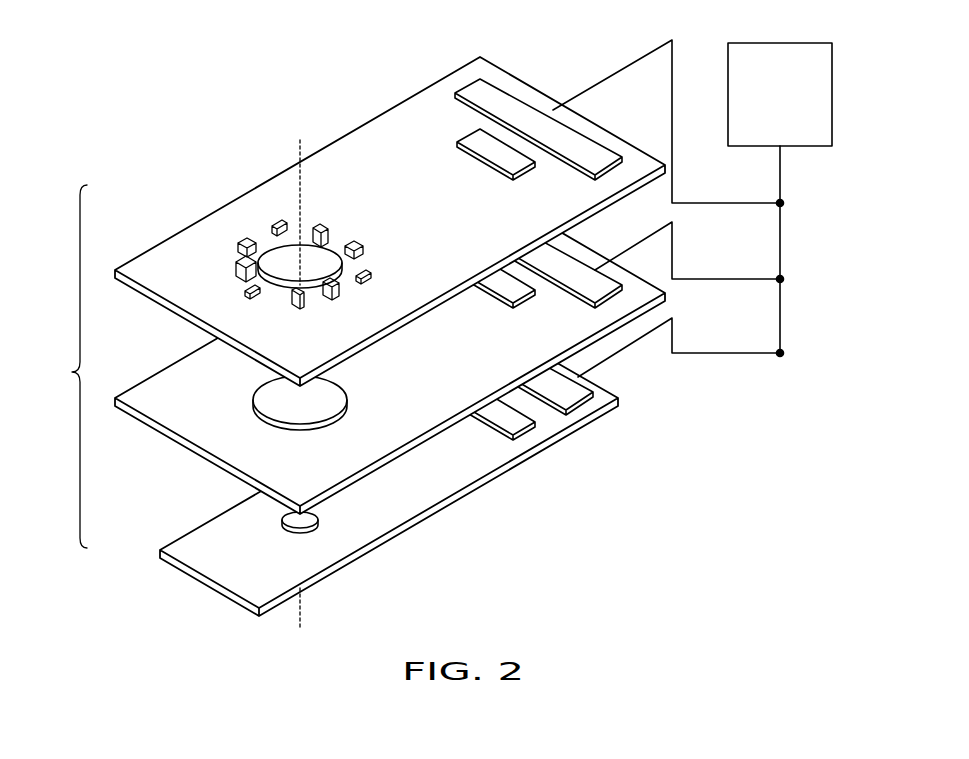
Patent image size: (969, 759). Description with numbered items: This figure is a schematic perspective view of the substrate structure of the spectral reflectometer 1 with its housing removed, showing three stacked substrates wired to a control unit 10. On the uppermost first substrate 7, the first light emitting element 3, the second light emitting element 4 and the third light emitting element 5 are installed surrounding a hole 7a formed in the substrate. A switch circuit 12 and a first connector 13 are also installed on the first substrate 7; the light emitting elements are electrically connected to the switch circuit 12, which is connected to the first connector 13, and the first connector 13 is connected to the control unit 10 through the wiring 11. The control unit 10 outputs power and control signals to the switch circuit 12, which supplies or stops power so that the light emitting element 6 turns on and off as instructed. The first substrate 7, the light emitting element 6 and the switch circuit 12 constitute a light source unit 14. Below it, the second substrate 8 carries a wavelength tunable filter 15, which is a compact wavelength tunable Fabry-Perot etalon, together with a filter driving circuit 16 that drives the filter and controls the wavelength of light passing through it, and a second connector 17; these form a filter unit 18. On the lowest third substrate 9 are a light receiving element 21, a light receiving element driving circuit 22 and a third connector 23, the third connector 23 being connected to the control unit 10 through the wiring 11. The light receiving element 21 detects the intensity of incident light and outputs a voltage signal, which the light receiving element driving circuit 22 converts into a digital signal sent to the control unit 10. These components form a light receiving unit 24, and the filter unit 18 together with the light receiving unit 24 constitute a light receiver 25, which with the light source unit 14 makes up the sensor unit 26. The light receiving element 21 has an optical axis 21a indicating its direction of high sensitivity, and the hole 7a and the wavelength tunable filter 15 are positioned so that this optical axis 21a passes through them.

The spectral reflectometer 1 is at (88, 98).
The first light emitting element 3 is at (278, 218).
The second light emitting element 4 is at (250, 233).
The third light emitting element 5 is at (236, 253).
The light emitting element 6 is at (245, 218).
The first substrate 7 is at (600, 205).
The hole 7a is at (318, 252).
The second substrate 8 is at (668, 298).
The third substrate 9 is at (493, 473).
The control unit 10 is at (828, 102).
The wiring 11 is at (782, 244).
The switch circuit 12 is at (485, 147).
The first connector 13 is at (537, 113).
The light source unit 14 is at (120, 246).
The wavelength tunable filter 15 is at (332, 393).
The filter driving circuit 16 is at (508, 290).
The second connector 17 is at (596, 288).
The filter unit 18 is at (140, 432).
The light receiving element 21 is at (318, 510).
The optical axis 21a is at (300, 168).
The light receiving element driving circuit 22 is at (502, 414).
The third connector 23 is at (574, 396).
The light receiving unit 24 is at (196, 518).
The light receiver 25 is at (157, 520).
The sensor unit 26 is at (62, 366).